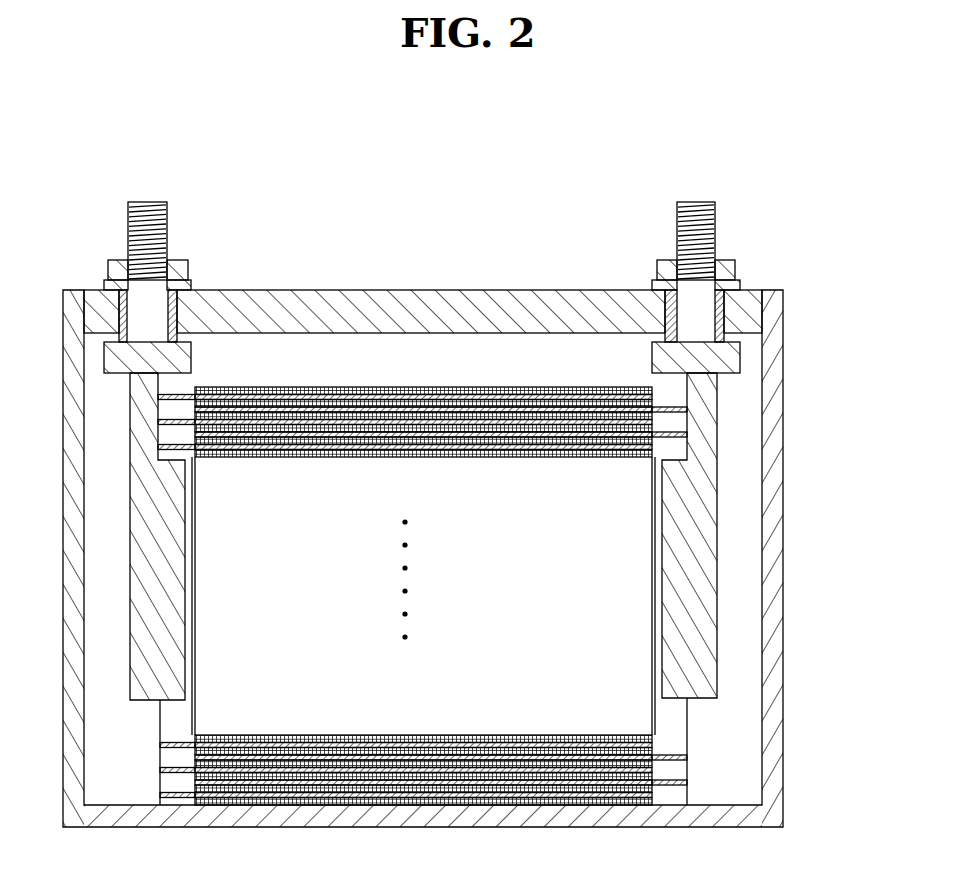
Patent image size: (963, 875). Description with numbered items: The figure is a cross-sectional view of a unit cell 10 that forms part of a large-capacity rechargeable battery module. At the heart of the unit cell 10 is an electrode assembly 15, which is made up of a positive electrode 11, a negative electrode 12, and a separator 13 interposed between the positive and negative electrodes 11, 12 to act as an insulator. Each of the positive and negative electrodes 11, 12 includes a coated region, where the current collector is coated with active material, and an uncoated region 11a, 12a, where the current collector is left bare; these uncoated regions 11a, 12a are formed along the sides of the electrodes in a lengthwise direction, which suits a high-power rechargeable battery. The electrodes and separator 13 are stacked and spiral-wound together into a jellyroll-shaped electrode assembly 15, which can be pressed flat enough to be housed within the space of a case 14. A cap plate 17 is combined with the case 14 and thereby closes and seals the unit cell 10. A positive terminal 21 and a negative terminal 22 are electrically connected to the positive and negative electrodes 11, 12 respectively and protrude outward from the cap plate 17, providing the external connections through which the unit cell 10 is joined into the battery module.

The unit cell 10 is at (444, 129).
The positive electrode 11 is at (426, 796).
The uncoated region 11a is at (172, 797).
The negative electrode 12 is at (250, 786).
The uncoated region 12a is at (660, 785).
The separator 13 is at (372, 776).
The case 14 is at (783, 592).
The electrode assembly 15 is at (422, 628).
The cap plate 17 is at (345, 291).
The positive terminal 21 is at (146, 203).
The negative terminal 22 is at (699, 203).